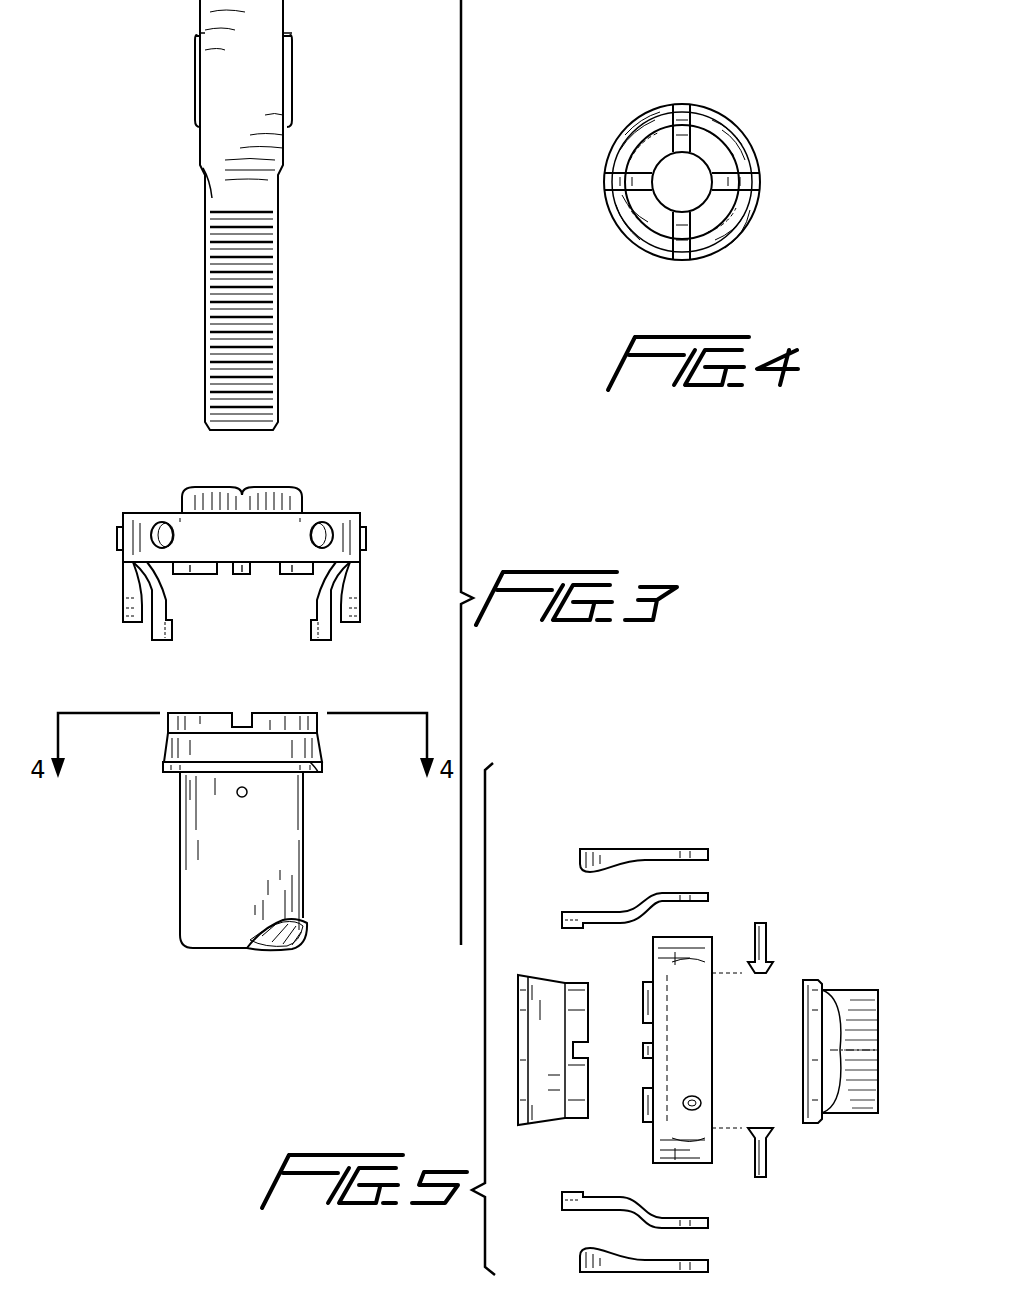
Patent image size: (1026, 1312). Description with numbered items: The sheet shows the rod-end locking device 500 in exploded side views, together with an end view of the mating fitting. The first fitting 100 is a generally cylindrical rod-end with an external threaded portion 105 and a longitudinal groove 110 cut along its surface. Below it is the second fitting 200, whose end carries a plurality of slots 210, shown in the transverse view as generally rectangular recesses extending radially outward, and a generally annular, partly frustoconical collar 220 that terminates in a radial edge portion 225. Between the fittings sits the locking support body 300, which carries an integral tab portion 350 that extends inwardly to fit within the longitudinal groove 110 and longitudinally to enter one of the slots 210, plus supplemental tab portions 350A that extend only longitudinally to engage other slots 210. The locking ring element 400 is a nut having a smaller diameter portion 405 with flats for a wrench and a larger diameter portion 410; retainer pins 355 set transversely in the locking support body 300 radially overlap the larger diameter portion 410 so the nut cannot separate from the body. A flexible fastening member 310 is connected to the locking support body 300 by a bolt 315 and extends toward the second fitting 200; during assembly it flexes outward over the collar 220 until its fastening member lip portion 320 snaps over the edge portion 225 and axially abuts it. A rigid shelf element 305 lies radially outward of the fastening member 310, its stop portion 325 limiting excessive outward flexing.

In FIG. 3, the first fitting 100 is at (270, 142).
In FIG. 3, the external threaded portion 105 is at (258, 235).
In FIG. 3, the longitudinal groove 110 is at (208, 195).
In FIG. 3, the second fitting 200 is at (197, 855).
In FIG. 4, the second fitting 200 is at (747, 146).
In FIG. 3, the slots 210 is at (243, 713).
In FIG. 4, the slots 210 is at (678, 125).
In FIG. 5, the slots 210 is at (580, 1050).
In FIG. 3, the collar 220 is at (297, 750).
In FIG. 4, the collar 220 is at (727, 132).
In FIG. 5, the collar 220 is at (552, 993).
In FIG. 3, the edge portion 225 is at (313, 775).
In FIG. 3, the locking support body 300 is at (250, 458).
In FIG. 5, the locking support body 300 is at (664, 1054).
In FIG. 3, the shelf element 305 is at (360, 597).
In FIG. 5, the shelf element 305 is at (602, 853).
In FIG. 3, the fastening member 310 is at (320, 607).
In FIG. 5, the fastening member 310 is at (565, 913).
In FIG. 3, the bolt 315 is at (366, 538).
In FIG. 5, the bolt 315 is at (760, 933).
In FIG. 3, the fastening member lip portion 320 is at (303, 615).
In FIG. 3, the stop portion 325 is at (345, 613).
In FIG. 3, the tab portion 350 is at (188, 560).
In FIG. 5, the tab portion 350 is at (647, 1002).
In FIG. 3, the supplemental tab portions 350A is at (240, 563).
In FIG. 5, the supplemental tab portions 350A is at (647, 1097).
In FIG. 3, the retainer pins 355 is at (330, 533).
In FIG. 5, the retainer pins 355 is at (692, 1103).
In FIG. 3, the locking ring element 400 is at (270, 497).
In FIG. 5, the locking ring element 400 is at (853, 1044).
In FIG. 5, the smaller diameter portion 405 is at (850, 1097).
In FIG. 5, the larger diameter portion 410 is at (810, 985).
In FIG. 3, the rod-end locking device 500 is at (108, 585).
In FIG. 5, the rod-end locking device 500 is at (780, 1205).